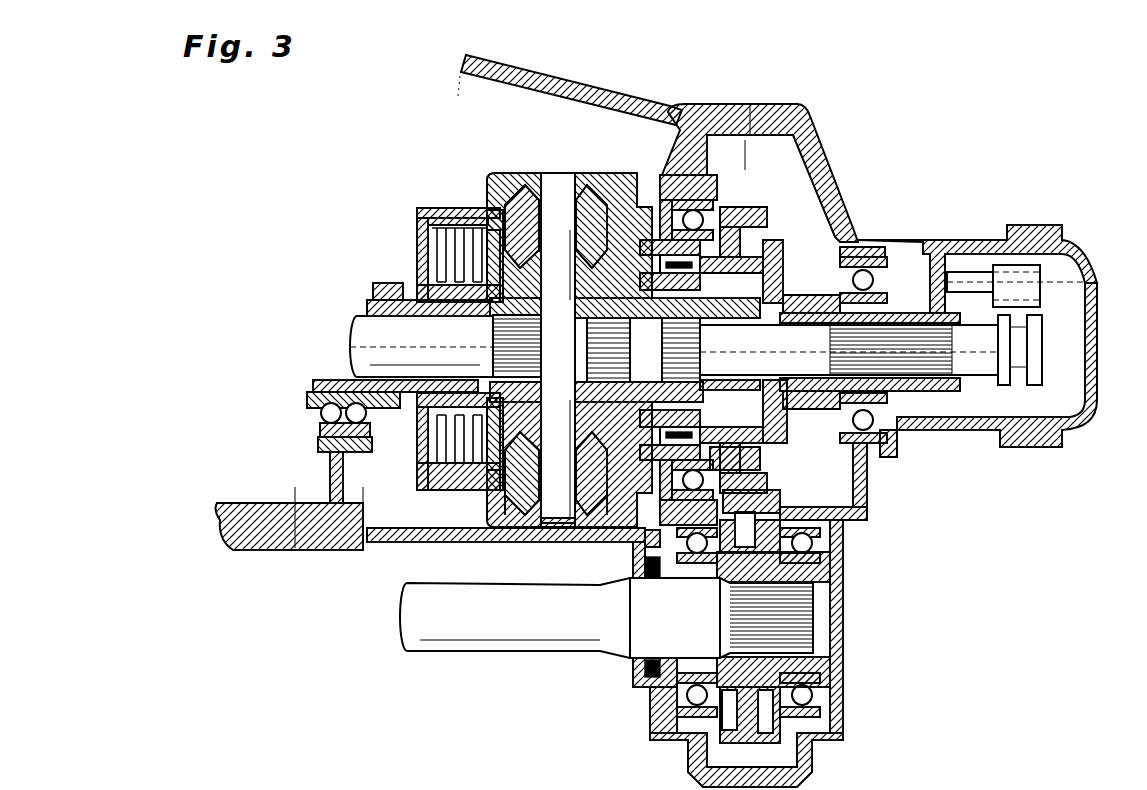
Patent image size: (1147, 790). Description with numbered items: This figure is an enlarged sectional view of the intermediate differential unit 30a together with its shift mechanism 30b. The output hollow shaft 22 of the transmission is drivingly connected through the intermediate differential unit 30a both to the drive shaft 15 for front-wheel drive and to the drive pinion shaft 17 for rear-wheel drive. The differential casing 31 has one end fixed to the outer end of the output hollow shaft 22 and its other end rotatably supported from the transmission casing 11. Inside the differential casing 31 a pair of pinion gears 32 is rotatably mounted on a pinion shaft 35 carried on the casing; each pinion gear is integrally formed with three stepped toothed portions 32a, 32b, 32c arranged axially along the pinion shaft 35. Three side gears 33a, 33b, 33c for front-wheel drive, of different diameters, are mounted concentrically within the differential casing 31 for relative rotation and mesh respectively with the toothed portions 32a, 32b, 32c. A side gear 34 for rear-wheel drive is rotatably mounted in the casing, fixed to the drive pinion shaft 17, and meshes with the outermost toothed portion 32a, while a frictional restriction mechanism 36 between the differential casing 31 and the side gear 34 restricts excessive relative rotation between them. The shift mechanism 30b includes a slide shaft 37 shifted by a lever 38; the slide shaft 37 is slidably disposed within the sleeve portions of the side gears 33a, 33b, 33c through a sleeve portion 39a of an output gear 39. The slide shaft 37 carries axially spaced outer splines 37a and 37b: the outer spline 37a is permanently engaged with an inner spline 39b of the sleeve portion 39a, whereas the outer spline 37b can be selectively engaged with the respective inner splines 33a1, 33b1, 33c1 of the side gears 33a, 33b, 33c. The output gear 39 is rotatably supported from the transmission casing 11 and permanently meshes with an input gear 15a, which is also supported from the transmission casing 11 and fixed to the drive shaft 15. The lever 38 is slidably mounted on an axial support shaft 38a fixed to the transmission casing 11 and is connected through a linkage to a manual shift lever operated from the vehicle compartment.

The transmission casing 11 is at (518, 68).
The drive shaft 15 is at (440, 640).
The input gear 15a is at (770, 497).
The drive pinion shaft 17 is at (368, 322).
The output hollow shaft 22 is at (330, 380).
The intermediate differential unit 30a is at (568, 168).
The shift mechanism 30b is at (978, 390).
The differential casing 31 is at (500, 170).
The pinion gears 32 is at (546, 176).
The outermost toothed portion 32a is at (556, 502).
The toothed portion 32b is at (575, 470).
The toothed portion 32c is at (541, 452).
The side gear 33a is at (541, 226).
The inner spline 33a1 is at (786, 302).
The side gear 33b is at (575, 226).
The inner spline 33b1 is at (724, 297).
The side gear 33c is at (535, 344).
The inner spline 33c1 is at (690, 345).
The side gear for rear-wheel drive 34 is at (490, 210).
The pinion shaft 35 is at (556, 530).
The frictional restriction mechanism 36 is at (425, 238).
The slide shaft 37 is at (1025, 352).
The outer spline 37a is at (836, 345).
The outer spline 37b is at (715, 358).
The lever 38 is at (1030, 275).
The axial support shaft 38a is at (1077, 283).
The output gear 39 is at (750, 210).
The sleeve portion 39a is at (926, 316).
The inner spline 39b is at (928, 374).